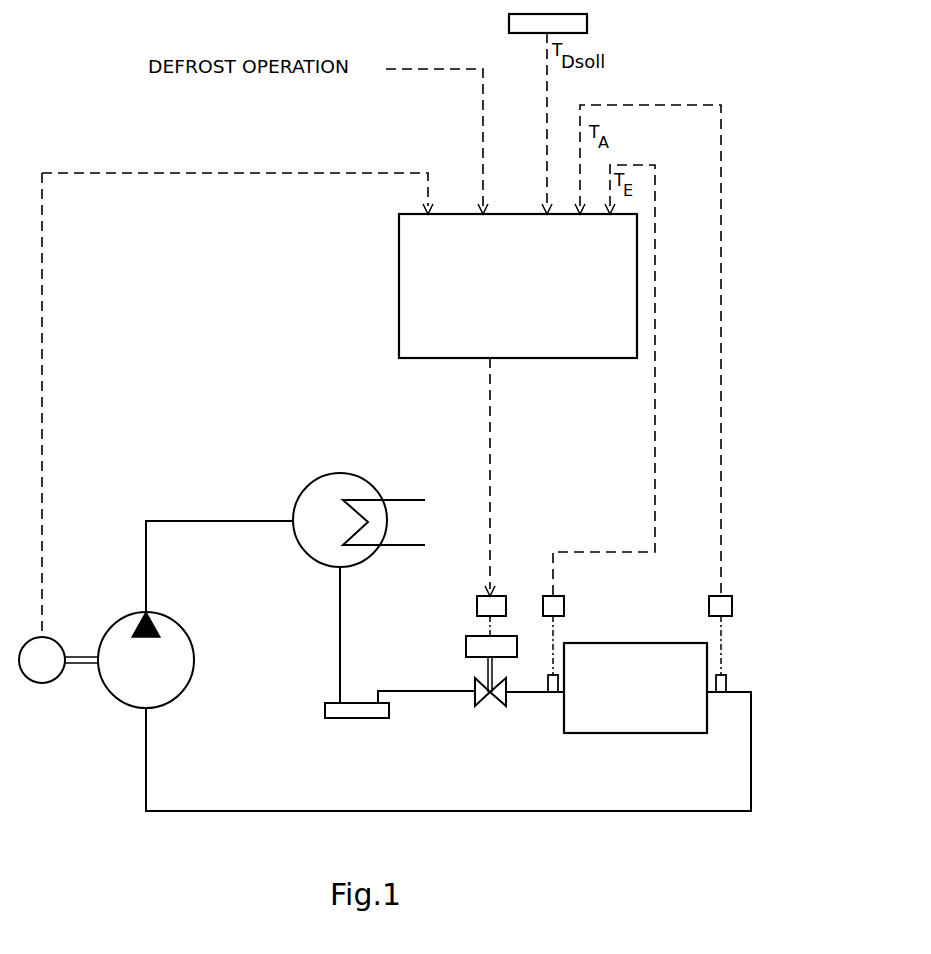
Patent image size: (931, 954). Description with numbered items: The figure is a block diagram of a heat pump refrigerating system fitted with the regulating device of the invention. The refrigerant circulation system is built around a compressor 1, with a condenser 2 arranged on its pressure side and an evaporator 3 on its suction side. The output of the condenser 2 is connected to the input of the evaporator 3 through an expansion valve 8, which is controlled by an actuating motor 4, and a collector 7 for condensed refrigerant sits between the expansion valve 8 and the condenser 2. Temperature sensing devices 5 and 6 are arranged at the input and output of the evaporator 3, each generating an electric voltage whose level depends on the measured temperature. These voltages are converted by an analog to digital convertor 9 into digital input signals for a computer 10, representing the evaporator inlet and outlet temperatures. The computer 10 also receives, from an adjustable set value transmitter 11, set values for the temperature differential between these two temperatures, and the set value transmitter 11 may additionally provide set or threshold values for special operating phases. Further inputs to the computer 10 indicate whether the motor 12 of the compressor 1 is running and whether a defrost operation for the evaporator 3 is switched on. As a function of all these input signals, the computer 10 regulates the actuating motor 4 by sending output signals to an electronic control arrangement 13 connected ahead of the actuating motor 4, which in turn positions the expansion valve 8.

The compressor 1 is at (185, 674).
The condenser 2 is at (316, 540).
The evaporator 3 is at (634, 722).
The actuating motor 4 is at (466, 647).
The temperature sensing device 5 is at (551, 696).
The temperature sensing device 6 is at (719, 695).
The collector 7 is at (355, 712).
The expansion valve 8 is at (484, 700).
The analog to digital convertor 9 is at (564, 604).
The computer 10 is at (621, 348).
The set value transmitter 11 is at (570, 24).
The motor 12 is at (44, 670).
The electronic control arrangement 13 is at (477, 604).